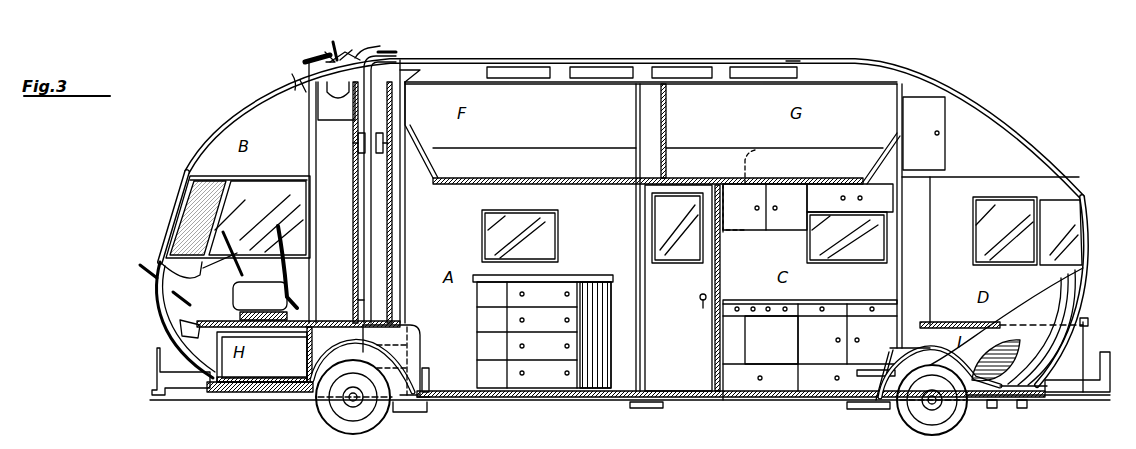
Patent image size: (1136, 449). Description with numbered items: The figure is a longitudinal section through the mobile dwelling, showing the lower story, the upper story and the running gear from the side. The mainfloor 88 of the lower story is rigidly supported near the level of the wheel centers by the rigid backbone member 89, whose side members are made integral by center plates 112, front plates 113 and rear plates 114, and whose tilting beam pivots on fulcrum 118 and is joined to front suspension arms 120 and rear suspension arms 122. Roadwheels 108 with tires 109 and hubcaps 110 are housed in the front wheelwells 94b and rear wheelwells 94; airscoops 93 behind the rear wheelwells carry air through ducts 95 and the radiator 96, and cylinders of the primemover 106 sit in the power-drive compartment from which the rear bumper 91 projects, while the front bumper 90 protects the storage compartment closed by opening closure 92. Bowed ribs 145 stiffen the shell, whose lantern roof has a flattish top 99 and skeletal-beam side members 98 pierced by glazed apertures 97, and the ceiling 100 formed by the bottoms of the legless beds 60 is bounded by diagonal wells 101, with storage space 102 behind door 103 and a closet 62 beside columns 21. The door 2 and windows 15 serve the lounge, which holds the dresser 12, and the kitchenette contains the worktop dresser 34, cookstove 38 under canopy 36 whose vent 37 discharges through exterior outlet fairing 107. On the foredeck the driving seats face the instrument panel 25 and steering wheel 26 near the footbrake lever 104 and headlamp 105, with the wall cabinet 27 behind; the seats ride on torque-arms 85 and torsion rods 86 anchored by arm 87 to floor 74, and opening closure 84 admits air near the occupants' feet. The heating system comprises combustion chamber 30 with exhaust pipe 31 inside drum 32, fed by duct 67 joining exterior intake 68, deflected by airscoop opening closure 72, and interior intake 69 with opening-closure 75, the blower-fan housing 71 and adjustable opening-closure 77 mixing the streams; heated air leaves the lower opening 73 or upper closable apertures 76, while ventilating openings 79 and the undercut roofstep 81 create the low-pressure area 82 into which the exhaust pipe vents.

The door 2 is at (682, 288).
The dresser 12 is at (575, 276).
The windows 15 is at (1000, 221).
The columns 21 is at (636, 117).
The instrument panel 25 is at (192, 278).
The steering wheel 26 is at (233, 246).
The wall cabinet 27 is at (357, 191).
The combustion chamber 30 is at (421, 336).
The exhaust pipe 31 is at (364, 266).
The drum 32 is at (353, 230).
The worktop dresser 34 is at (810, 333).
The canopy 36 is at (745, 238).
The vent 37 is at (767, 203).
The cookstove 38 is at (747, 300).
The double legless bed 60 is at (525, 155).
The closet 62 is at (665, 107).
The duct 67 is at (400, 69).
The intake 68 is at (315, 58).
The intake 69 is at (281, 94).
The blower-fan housing 71 is at (336, 102).
The airscoop opening closure 72 is at (327, 41).
The lower opening 73 is at (344, 298).
The floor 74 is at (321, 354).
The opening-closure 75 is at (297, 104).
The upper closable apertures 76 is at (353, 144).
The opening-closure 77 is at (345, 48).
The openings 79 is at (375, 346).
The roofstep 81 is at (368, 42).
The area of subnormal air pressure 82 is at (398, 46).
The opening closure 84 is at (147, 278).
The torque-arms 85 is at (267, 303).
The torsion rods 86 is at (240, 313).
The arm 87 is at (288, 333).
The mainfloor 88 is at (441, 378).
The backbone member 89 is at (562, 401).
The front bumper 90 is at (172, 388).
The rear bumper 91 is at (1102, 393).
The opening closure 92 is at (250, 392).
The airscoops 93 is at (1000, 374).
The rear wheelwells 94 is at (963, 372).
The front wheelwells 94b is at (389, 361).
The ducts 95 is at (1083, 322).
The radiator 96 is at (1090, 343).
The glazed apertures 97 is at (523, 74).
The skeletal-beam side members 98 is at (651, 78).
The flattish top 99 is at (790, 60).
The ceiling 100 is at (620, 185).
The diagonal wells 101 is at (427, 182).
The storage space 102 is at (971, 216).
The door 103 is at (924, 133).
The footbrake lever 104 is at (173, 303).
The headlamp 105 is at (182, 330).
The cylinders of primemover 106 is at (1030, 407).
The exterior outlet fairing 107 is at (747, 149).
The roadwheels 108 is at (948, 429).
The tires 109 is at (316, 412).
The hubcaps 110 is at (347, 407).
The center plates 112 is at (633, 403).
The front plates 113 is at (432, 403).
The rear plates 114 is at (853, 410).
The fulcrum 118 is at (747, 401).
The front suspension arms 120 is at (395, 412).
The rear suspension arms 122 is at (897, 404).
The ribs 145 is at (229, 127).